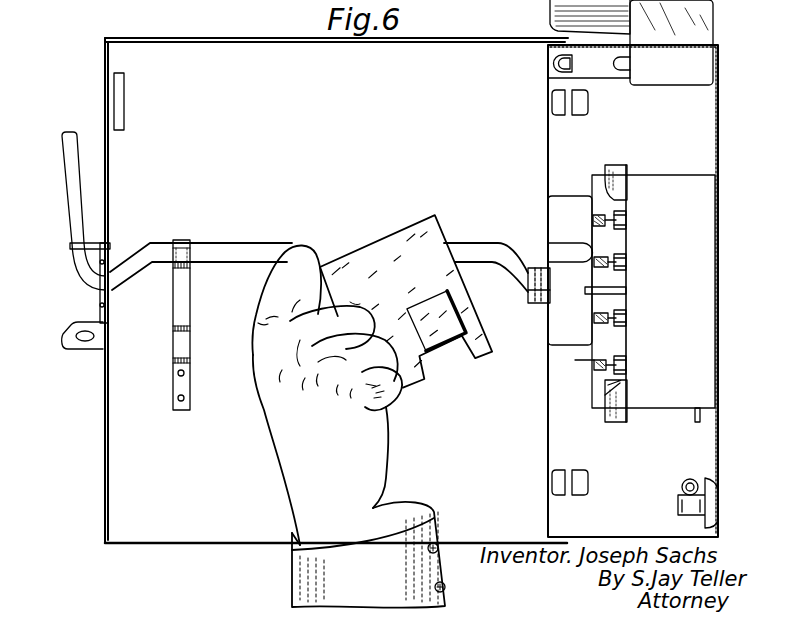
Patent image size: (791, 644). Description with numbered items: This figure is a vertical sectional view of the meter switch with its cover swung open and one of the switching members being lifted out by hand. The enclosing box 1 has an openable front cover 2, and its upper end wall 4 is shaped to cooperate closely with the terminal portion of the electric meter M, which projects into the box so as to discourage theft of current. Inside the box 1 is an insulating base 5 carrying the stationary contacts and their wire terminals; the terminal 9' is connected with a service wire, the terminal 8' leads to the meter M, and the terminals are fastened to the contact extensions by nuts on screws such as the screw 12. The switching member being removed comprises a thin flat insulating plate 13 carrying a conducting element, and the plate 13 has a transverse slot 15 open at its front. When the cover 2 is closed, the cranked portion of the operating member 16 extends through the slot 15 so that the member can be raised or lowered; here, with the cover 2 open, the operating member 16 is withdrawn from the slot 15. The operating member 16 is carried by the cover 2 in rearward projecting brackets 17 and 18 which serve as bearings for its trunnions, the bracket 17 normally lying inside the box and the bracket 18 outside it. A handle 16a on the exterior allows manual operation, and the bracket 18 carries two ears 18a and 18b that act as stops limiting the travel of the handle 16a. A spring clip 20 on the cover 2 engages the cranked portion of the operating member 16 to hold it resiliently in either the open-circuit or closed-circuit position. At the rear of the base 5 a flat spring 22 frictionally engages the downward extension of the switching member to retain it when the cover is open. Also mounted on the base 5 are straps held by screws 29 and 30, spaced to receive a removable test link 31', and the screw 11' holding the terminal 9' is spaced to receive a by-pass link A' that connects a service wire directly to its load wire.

The enclosing box 1 is at (729, 89).
The openable front cover 2 is at (108, 60).
The electric meter M is at (553, 9).
The upper end wall 4 is at (548, 62).
The insulating base 5 is at (669, 184).
The wire terminal 8' is at (624, 166).
The wire terminal 9' is at (620, 415).
The by-pass link A' is at (608, 390).
The flat spring 22 is at (697, 421).
The insulating element 13 is at (569, 200).
The transverse slot 15 is at (352, 301).
The screw 12 is at (593, 221).
The screw 29 is at (598, 266).
The screw 30 is at (594, 318).
The test link 31' is at (629, 284).
The screw 11' is at (593, 376).
The bracket 17 is at (537, 301).
The cranked operating member 16 is at (247, 246).
The handle 16a is at (73, 200).
The bracket 18 is at (107, 304).
The ear 18a is at (73, 249).
The ear 18b is at (72, 331).
The spring clip 20 is at (186, 305).